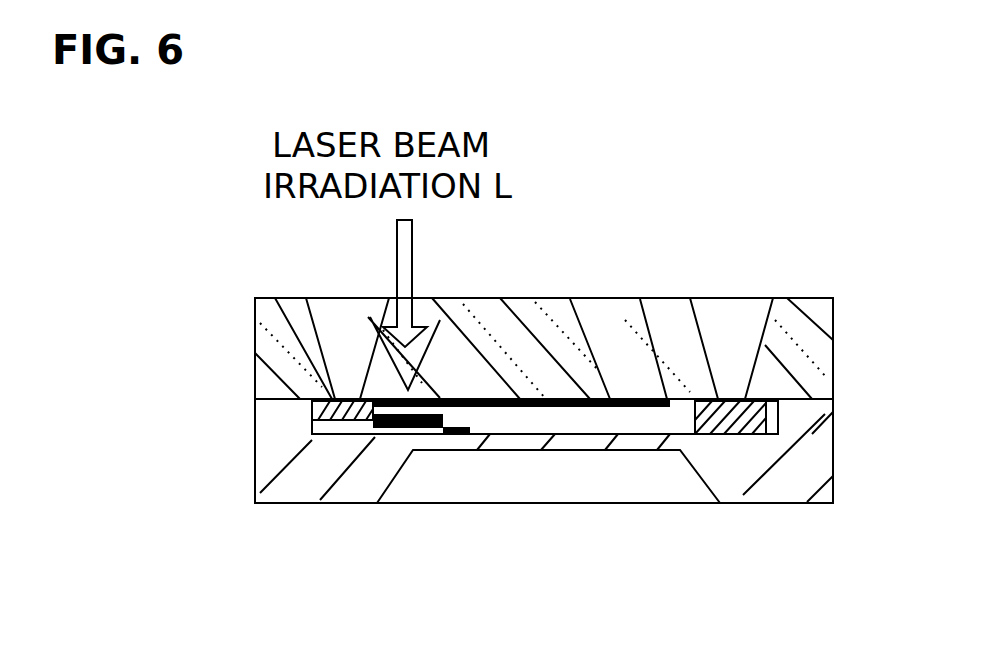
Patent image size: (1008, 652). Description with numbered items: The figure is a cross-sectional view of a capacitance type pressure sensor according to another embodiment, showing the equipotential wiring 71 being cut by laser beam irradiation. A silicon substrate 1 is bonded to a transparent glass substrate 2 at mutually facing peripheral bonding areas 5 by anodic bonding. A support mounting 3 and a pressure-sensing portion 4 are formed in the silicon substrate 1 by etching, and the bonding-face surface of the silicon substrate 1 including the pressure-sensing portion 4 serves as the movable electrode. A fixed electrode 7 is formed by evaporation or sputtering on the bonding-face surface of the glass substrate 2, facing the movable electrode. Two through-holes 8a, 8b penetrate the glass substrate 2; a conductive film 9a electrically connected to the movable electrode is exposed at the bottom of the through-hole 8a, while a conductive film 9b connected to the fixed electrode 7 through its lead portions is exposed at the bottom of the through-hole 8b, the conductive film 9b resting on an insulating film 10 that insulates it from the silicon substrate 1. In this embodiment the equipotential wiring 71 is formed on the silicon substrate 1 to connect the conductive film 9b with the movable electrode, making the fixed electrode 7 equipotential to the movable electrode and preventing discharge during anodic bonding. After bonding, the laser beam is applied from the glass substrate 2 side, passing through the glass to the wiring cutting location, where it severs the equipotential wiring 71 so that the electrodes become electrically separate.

The silicon substrate 1 is at (252, 467).
The glass substrate 2 is at (252, 348).
The support mounting 3 is at (352, 487).
The pressure-sensing portion 4 is at (575, 455).
The bonding area 5 is at (805, 423).
The fixed electrode 7 is at (605, 399).
The through-hole 8a is at (753, 313).
The through-hole 8b is at (337, 316).
The conductive film 9a is at (740, 437).
The conductive film 9b is at (312, 406).
The insulating film 10 is at (330, 440).
The equipotential wiring 71 is at (443, 440).